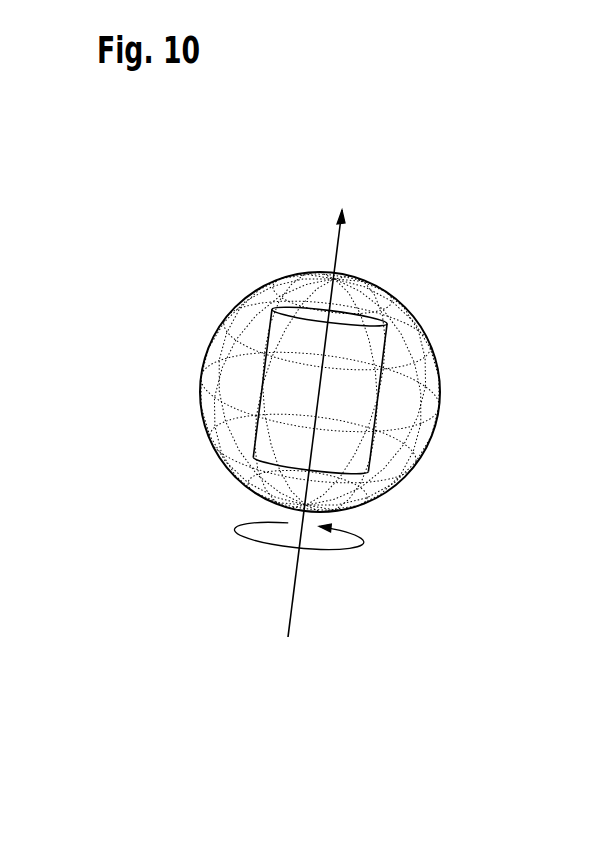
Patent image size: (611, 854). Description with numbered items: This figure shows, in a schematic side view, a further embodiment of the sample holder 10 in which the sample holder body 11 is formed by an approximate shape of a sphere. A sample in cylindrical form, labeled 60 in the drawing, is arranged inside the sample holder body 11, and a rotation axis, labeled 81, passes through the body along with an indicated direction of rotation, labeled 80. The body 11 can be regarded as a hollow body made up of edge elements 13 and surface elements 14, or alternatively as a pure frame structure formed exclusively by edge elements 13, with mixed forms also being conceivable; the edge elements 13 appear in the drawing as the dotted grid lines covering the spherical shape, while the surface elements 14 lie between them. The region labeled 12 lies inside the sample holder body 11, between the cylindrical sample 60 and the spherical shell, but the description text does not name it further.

The sample holder 10 is at (383, 220).
The sample holder body 11 is at (407, 310).
The interior space 12 is at (250, 333).
The edge element 13 is at (427, 340).
The surface element 14 is at (402, 410).
The electronics unit 60 is at (362, 355).
The direction of rotation 80 is at (283, 583).
The axis of rotation 81 is at (293, 607).